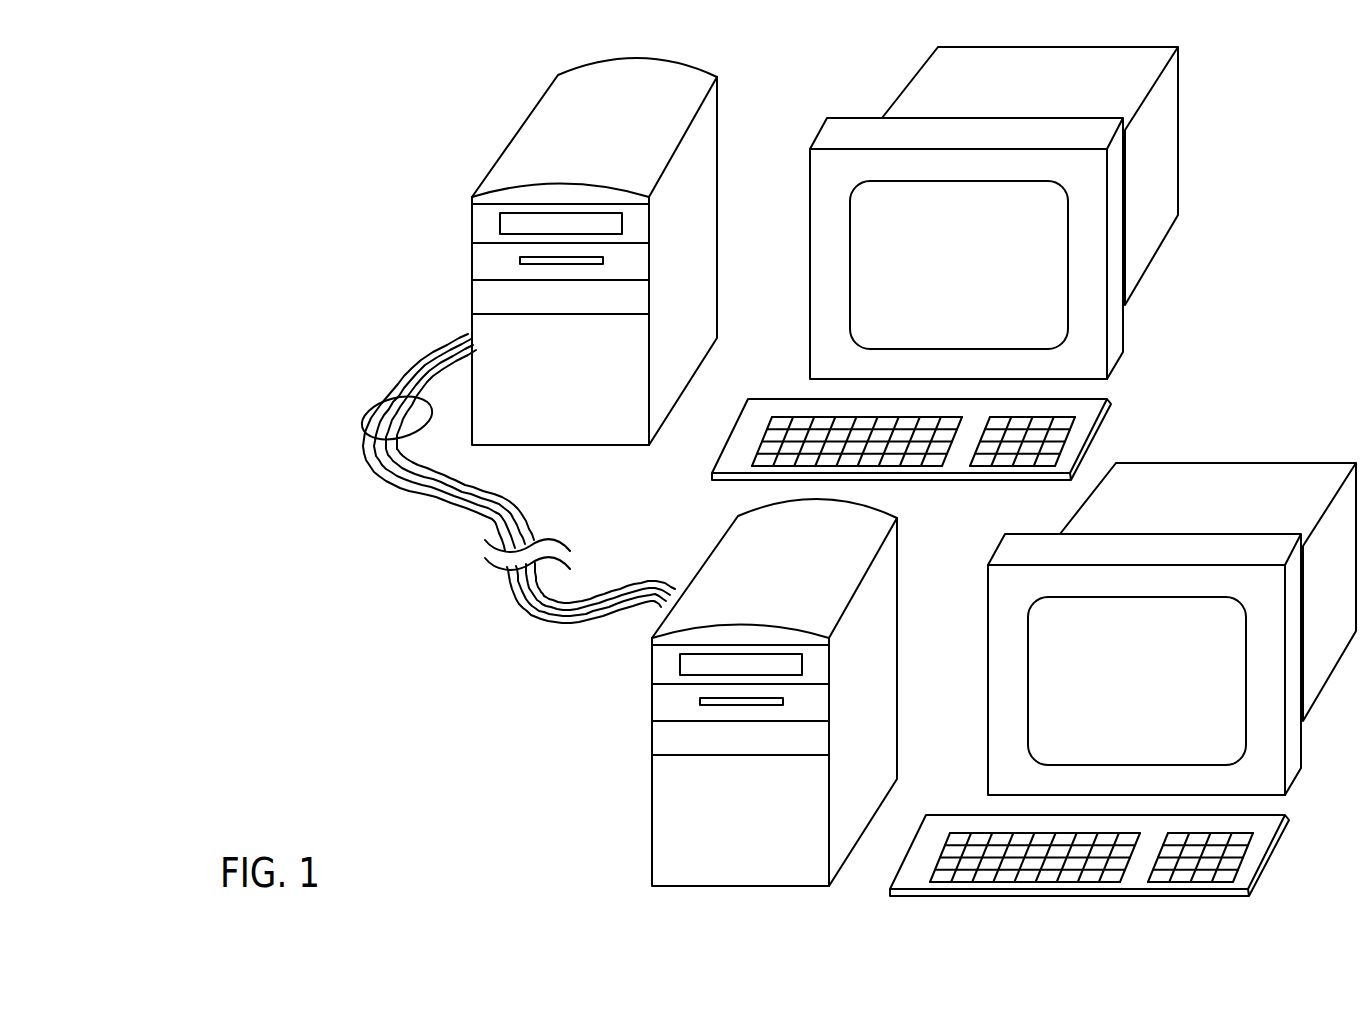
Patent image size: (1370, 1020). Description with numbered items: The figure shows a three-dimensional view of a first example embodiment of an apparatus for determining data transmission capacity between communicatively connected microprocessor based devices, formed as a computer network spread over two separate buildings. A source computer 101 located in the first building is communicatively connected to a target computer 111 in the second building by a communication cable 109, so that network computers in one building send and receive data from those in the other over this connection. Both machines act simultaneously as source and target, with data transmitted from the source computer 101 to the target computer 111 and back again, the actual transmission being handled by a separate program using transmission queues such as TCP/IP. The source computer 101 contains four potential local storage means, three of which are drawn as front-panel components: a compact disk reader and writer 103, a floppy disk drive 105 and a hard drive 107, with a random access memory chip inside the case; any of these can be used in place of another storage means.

The source computer 101 is at (518, 251).
The compact disk reader and writer 103 is at (477, 221).
The floppy disk drive 105 is at (488, 267).
The hard drive 107 is at (482, 305).
The communication cable 109 is at (360, 433).
The target computer 111 is at (667, 853).